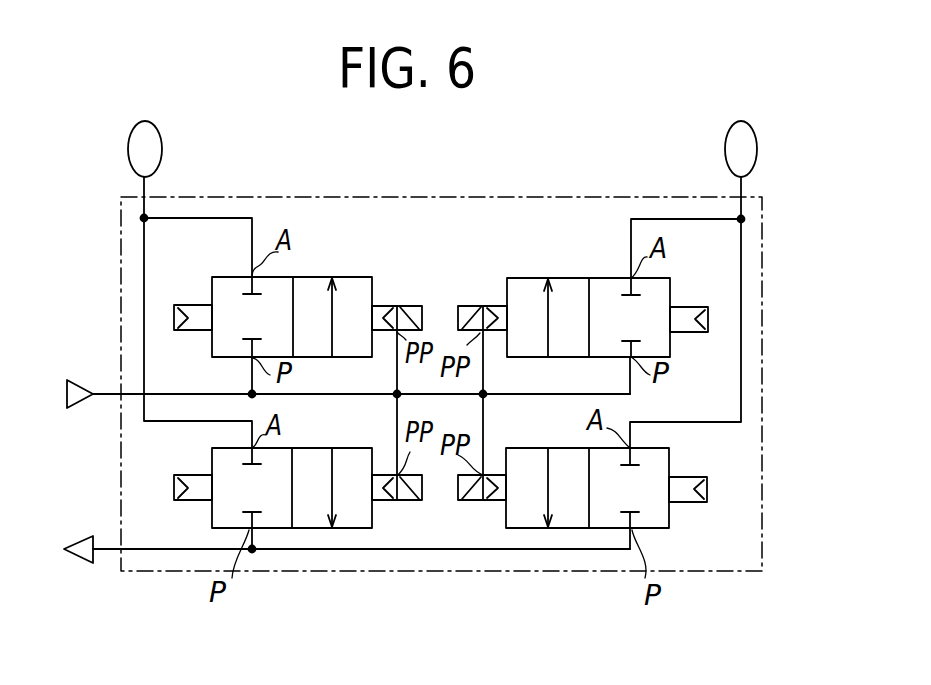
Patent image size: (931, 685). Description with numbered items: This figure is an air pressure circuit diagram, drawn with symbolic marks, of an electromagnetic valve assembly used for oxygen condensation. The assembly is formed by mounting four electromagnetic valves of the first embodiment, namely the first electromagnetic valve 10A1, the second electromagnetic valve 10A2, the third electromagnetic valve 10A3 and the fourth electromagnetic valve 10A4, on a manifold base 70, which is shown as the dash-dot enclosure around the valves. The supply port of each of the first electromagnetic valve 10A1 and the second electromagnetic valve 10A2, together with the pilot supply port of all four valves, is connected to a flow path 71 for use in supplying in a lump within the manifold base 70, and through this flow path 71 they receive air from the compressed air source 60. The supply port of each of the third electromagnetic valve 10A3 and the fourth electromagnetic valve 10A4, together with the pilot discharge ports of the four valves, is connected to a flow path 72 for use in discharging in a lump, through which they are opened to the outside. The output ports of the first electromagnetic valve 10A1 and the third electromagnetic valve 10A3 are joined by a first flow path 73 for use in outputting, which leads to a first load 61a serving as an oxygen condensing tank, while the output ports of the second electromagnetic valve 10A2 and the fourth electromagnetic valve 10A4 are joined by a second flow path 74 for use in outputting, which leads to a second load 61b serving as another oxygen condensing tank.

The compressed air source 60 is at (73, 409).
The first load 61a is at (741, 130).
The second load 61b is at (146, 129).
The manifold base 70 is at (448, 195).
The flow path for use in supplying in a lump 71 is at (133, 393).
The flow path for use in discharging in a lump 72 is at (150, 551).
The first flow path for use in outputting 73 is at (745, 209).
The second flow path for use in outputting 74 is at (143, 209).
The first electromagnetic valve 10A1 is at (562, 277).
The second electromagnetic valve 10A2 is at (345, 276).
The third electromagnetic valve 10A3 is at (660, 529).
The fourth electromagnetic valve 10A4 is at (352, 529).